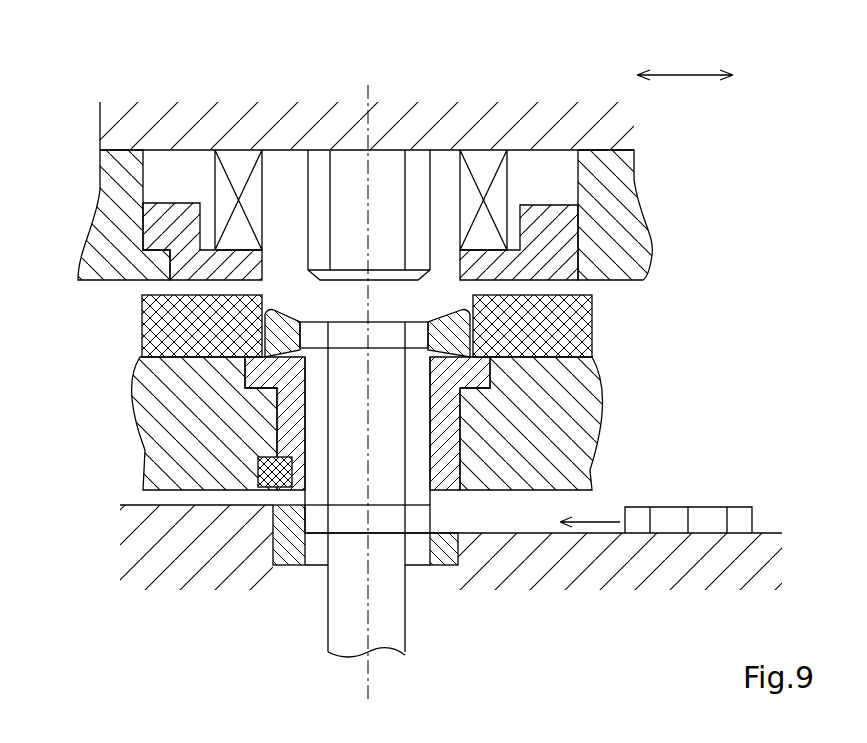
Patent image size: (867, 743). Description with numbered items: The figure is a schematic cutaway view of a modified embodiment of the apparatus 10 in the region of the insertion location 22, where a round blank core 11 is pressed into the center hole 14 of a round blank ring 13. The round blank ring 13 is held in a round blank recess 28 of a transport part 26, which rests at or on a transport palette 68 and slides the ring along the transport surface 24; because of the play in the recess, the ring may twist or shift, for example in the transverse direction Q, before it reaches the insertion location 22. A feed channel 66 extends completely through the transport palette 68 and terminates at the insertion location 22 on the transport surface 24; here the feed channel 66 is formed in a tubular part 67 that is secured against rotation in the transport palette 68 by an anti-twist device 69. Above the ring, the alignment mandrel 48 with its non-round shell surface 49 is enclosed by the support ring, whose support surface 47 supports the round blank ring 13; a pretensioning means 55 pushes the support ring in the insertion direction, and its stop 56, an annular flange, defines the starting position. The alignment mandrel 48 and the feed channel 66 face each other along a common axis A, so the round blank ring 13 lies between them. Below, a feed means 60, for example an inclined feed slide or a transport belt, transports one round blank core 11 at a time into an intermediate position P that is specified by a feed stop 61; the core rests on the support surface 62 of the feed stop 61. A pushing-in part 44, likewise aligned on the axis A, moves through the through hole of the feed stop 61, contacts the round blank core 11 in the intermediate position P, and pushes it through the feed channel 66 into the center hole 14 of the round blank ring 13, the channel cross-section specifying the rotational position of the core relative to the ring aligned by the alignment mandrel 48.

The apparatus 10 is at (677, 160).
The round blank core 11 is at (700, 518).
The round blank ring 13 is at (262, 347).
The center hole 14 is at (322, 320).
The insertion location 22 is at (603, 293).
The transport surface 24 is at (593, 353).
The transport part 26 is at (595, 328).
The round blank recess 28 is at (265, 305).
The pushing-in part 44 is at (395, 625).
The support surface 47 is at (545, 270).
The alignment mandrel 48 is at (390, 170).
The shell surface 49 is at (430, 180).
The pretensioning means 55 is at (235, 162).
The stop 56 is at (168, 227).
The feed means 60 is at (768, 530).
The feed stop 61 is at (282, 542).
The support surface 62 is at (447, 533).
The feed channel 66 is at (398, 435).
The tubular part 67 is at (442, 465).
The transport palette 68 is at (580, 388).
The anti-twist device 69 is at (257, 477).
The axis A is at (380, 665).
The intermediate position P is at (313, 547).
The transverse direction Q is at (688, 73).